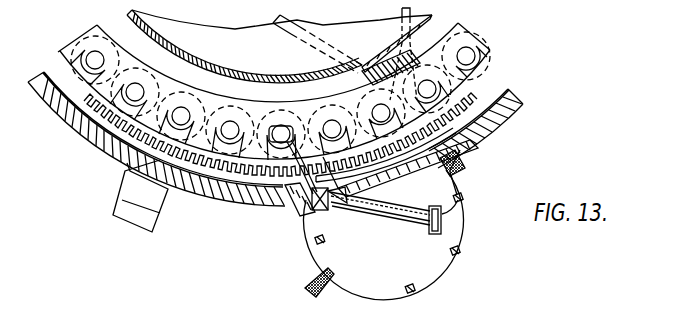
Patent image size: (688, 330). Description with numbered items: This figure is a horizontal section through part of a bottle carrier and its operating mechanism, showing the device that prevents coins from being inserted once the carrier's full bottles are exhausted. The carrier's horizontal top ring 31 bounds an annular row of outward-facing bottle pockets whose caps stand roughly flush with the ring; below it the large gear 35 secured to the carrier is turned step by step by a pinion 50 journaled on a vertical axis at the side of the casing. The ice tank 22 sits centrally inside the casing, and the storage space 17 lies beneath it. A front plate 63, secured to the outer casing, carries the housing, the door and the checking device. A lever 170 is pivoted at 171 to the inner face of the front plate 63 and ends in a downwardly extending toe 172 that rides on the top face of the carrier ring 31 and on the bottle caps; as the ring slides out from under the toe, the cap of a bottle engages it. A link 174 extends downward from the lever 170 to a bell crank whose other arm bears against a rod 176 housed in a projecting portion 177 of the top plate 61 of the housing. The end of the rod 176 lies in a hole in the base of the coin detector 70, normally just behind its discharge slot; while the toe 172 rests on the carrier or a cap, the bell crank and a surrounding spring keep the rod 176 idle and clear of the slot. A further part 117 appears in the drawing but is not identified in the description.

The ice tank 22 is at (237, 76).
The storage space 17 is at (258, 114).
The prong or toe 172 is at (283, 126).
The top ring 31 is at (310, 112).
The large gear 35 is at (486, 77).
The front plate 63 is at (464, 154).
The pivot 171 is at (428, 172).
The coin detector 70 is at (443, 213).
The end fitting 117 is at (470, 228).
The lever 170 is at (297, 212).
The link 174 is at (335, 212).
The projecting portion 177 is at (377, 222).
The rod 176 is at (405, 218).
The top plate 61 is at (383, 235).
The pinion 50 is at (386, 155).